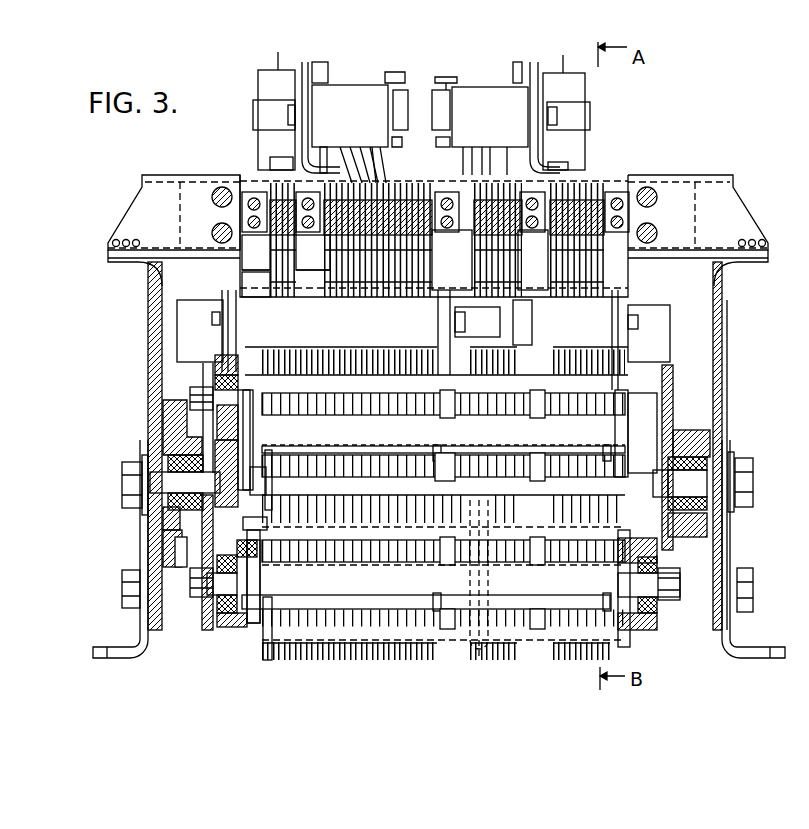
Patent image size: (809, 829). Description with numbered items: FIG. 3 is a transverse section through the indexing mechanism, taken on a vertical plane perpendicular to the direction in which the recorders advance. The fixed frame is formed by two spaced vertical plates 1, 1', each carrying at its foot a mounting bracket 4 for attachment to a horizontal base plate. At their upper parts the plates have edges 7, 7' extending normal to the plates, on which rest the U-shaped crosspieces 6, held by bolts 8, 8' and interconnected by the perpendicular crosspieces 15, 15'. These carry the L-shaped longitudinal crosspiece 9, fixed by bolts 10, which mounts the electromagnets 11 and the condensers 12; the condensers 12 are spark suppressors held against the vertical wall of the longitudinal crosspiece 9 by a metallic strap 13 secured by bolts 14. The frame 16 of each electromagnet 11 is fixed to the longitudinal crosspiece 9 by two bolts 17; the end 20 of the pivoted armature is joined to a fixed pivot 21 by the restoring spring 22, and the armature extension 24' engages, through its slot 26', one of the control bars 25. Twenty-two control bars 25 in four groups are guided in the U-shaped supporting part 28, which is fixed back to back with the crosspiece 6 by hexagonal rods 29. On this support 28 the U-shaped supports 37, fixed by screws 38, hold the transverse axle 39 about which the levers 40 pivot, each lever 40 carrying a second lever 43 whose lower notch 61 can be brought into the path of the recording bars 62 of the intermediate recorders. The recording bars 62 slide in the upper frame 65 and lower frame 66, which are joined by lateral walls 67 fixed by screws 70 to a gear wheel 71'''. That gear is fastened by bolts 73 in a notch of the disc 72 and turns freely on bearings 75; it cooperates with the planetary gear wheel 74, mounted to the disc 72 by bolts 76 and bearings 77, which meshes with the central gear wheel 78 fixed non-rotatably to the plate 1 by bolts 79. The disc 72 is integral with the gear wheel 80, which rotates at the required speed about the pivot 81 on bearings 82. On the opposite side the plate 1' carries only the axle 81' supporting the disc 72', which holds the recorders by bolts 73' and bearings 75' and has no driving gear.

The vertical plate 1 is at (139, 446).
The vertical plate 1' is at (738, 446).
The mounting bracket 4 is at (133, 650).
The U-shaped crosspiece 6 is at (142, 189).
The edge of vertical plate 7 is at (169, 275).
The edge of vertical plate 7' is at (741, 276).
The bolt 8 is at (110, 242).
The fastening rivets 8' is at (739, 241).
The L-shaped longitudinal crosspiece 9 is at (545, 90).
The bolt 10 is at (570, 168).
The electromagnet 11 is at (502, 128).
The condenser 12 is at (583, 96).
The metallic strap 13 is at (590, 115).
The bolt 14 is at (568, 116).
The crosspiece 15 is at (163, 215).
The crosspiece 15' is at (716, 215).
The frame of electromagnet 16 is at (533, 72).
The bolt 17 is at (513, 75).
The end of armature 20 is at (452, 85).
The fixed pivot 21 is at (444, 138).
The restoring spring of armature 22 is at (438, 108).
The wire 24' is at (394, 165).
The control bar 25 is at (256, 252).
The wires 26' is at (363, 153).
The supporting part 28 is at (256, 262).
The hexagonal rod 29 is at (216, 189).
The U-shaped support 37 is at (313, 252).
The screw 38 is at (313, 264).
The transverse axle 39 is at (311, 190).
The lever 40 is at (277, 200).
The second lever 43 is at (278, 292).
The notch 61 is at (268, 300).
The recording bar 62 is at (286, 497).
The upper frame 65 is at (415, 538).
The lower frame 66 is at (320, 630).
The lateral wall 67 is at (279, 514).
The screw 70 is at (250, 552).
The plate 71''' is at (231, 600).
The disc 72 is at (204, 517).
The disc 72' is at (688, 457).
The bolt 73 is at (205, 589).
The bolt 73' is at (666, 575).
The planetary gear wheel 74 is at (238, 365).
The bearing 75 is at (216, 627).
The bearing 75' is at (657, 623).
The bolt 76 is at (200, 392).
The bearing 77 is at (238, 383).
The central gear wheel 78 is at (232, 462).
The bolt 79 is at (130, 480).
The gear wheel 80 is at (170, 563).
The pivot 81 is at (156, 463).
The axle 81' is at (727, 483).
The bearing 82 is at (166, 440).